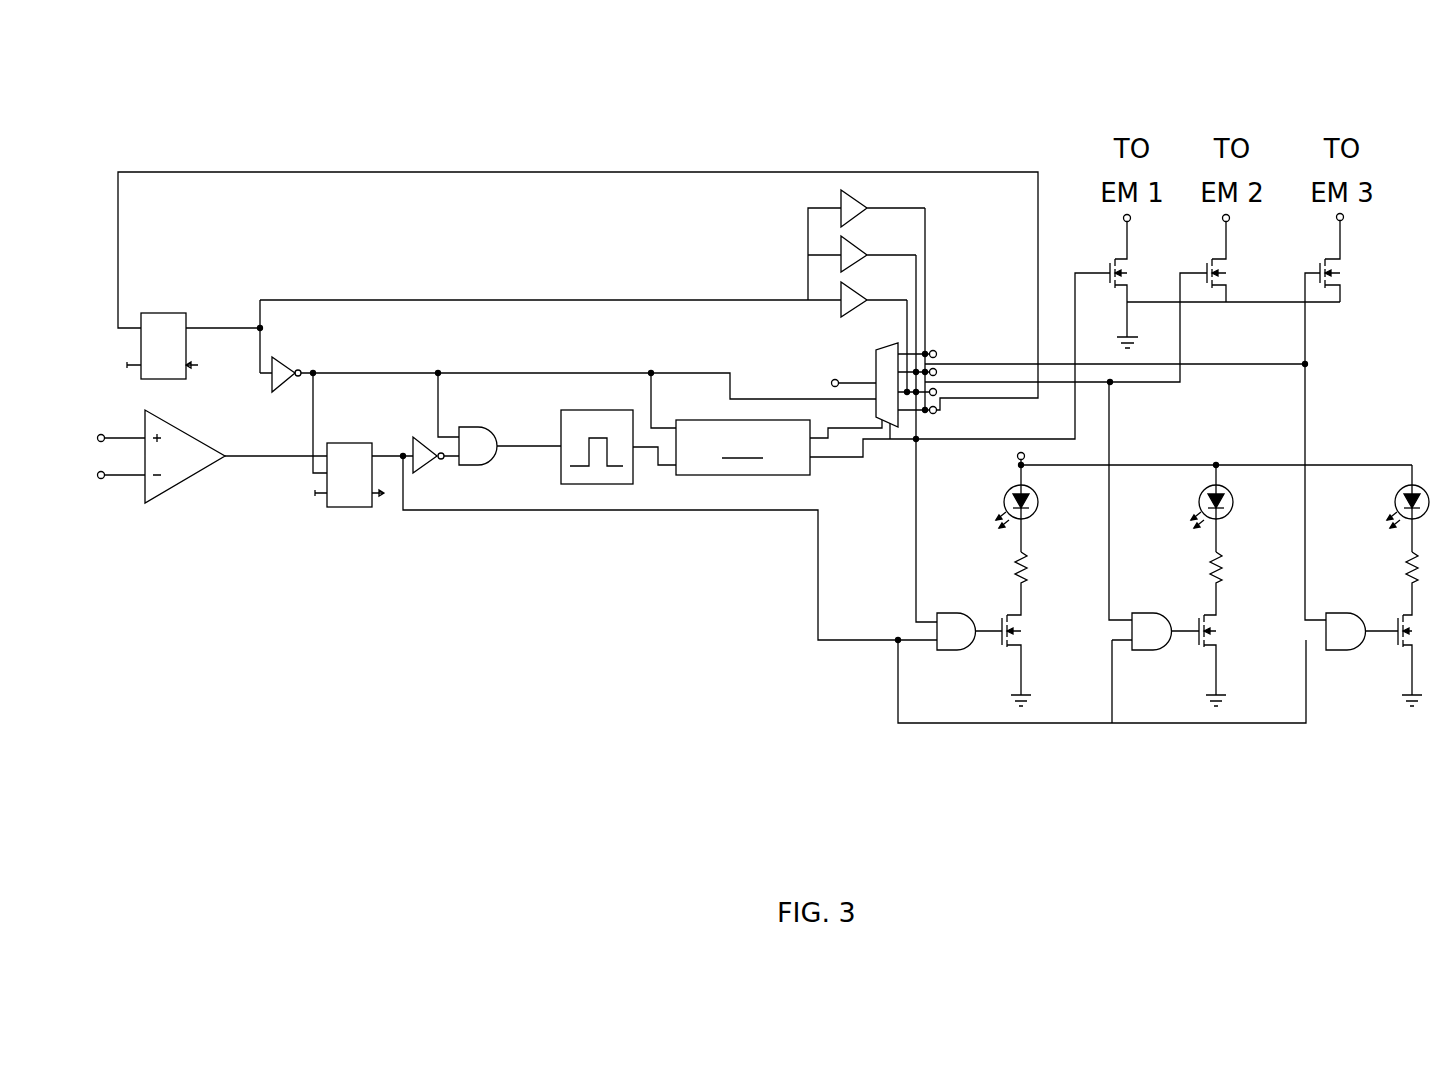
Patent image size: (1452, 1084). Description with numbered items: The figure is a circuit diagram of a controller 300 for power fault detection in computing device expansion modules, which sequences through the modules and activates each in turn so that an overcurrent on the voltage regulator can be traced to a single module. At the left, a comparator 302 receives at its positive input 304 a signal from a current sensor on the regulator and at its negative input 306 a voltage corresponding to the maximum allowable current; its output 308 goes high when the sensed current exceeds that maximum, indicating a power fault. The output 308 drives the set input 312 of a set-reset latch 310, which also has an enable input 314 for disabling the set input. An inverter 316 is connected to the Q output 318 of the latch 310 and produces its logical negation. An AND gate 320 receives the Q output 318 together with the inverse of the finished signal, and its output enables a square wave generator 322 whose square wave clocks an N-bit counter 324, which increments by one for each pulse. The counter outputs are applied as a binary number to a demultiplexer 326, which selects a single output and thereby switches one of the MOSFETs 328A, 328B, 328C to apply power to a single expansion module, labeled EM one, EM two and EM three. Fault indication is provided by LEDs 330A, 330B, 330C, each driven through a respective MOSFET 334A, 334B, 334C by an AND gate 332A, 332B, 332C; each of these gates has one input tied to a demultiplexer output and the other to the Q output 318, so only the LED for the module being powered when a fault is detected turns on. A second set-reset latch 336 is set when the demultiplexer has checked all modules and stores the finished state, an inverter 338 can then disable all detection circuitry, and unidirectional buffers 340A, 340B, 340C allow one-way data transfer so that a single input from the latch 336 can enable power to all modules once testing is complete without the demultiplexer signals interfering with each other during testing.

The controller 300 is at (272, 135).
The comparator 302 is at (180, 482).
The positive input 304 is at (127, 433).
The negative input 306 is at (127, 480).
The output 308 is at (290, 460).
The set-reset latch 310 is at (343, 508).
The set input 312 is at (318, 443).
The enable input 314 is at (325, 493).
The inverter 316 is at (413, 472).
The Q output 318 is at (382, 460).
The AND gate 320 is at (478, 467).
The square wave generator 322 is at (593, 484).
The N-bit counter 324 is at (743, 447).
The demultiplexer 326 is at (876, 368).
The MOSFET 328A is at (1110, 260).
The MOSFET 328B is at (1207, 260).
The MOSFET 328C is at (1318, 263).
The LED 330A is at (1038, 507).
The LED 330B is at (1234, 507).
The LED 330C is at (1398, 495).
The AND gate 332A is at (952, 650).
The AND gate 332B is at (1148, 650).
The AND gate 332C is at (1333, 650).
The MOSFET 334A is at (1002, 622).
The MOSFET 334B is at (1199, 622).
The MOSFET 334C is at (1393, 622).
The set-reset latch 336 is at (182, 313).
The inverter 338 is at (283, 360).
The unidirectional buffer 340A is at (841, 200).
The unidirectional buffer 340B is at (841, 247).
The unidirectional buffer 340C is at (841, 293).